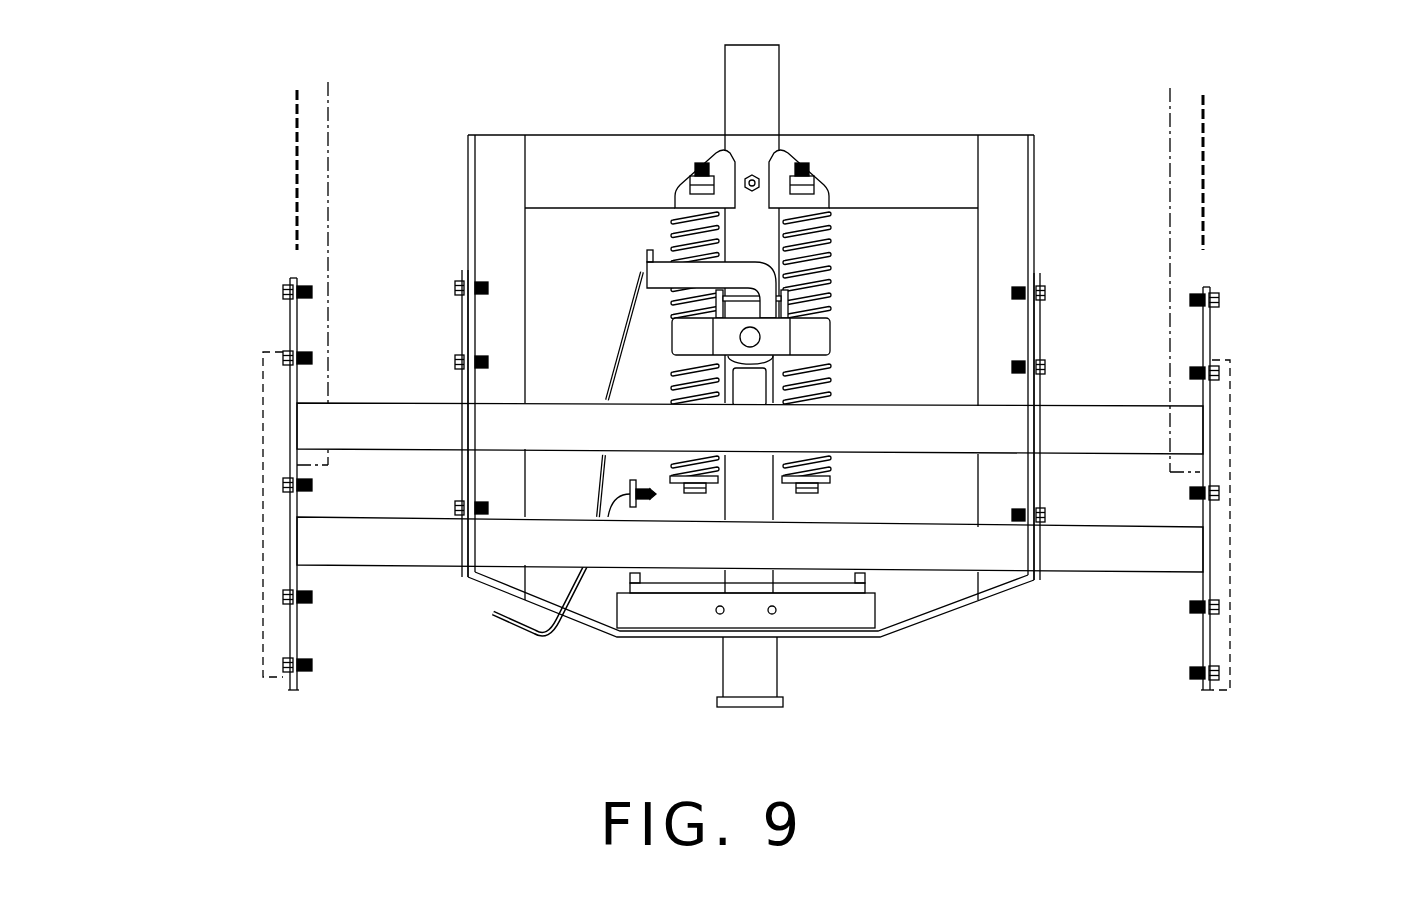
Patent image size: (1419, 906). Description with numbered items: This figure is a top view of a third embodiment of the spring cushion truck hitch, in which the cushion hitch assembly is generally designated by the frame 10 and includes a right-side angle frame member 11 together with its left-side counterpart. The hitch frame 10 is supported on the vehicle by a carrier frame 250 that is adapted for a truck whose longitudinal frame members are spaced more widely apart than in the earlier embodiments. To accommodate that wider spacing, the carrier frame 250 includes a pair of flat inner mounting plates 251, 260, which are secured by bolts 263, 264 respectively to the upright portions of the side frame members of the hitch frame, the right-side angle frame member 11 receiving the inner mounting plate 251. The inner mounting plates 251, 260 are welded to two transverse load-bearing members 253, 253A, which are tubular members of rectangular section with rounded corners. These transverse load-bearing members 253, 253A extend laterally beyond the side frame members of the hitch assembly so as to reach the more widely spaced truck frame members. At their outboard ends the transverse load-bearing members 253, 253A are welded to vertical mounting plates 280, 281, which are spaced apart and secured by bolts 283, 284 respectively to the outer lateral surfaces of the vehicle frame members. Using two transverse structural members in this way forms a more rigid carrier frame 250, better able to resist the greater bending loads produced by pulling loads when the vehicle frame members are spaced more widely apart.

The frame 10 is at (936, 131).
The right-side angle frame member 11 is at (1035, 175).
The carrier frame 250 is at (1196, 513).
The inner mounting plate 251 is at (1038, 347).
The transverse load-bearing member 253 is at (872, 540).
The transverse load-bearing member 253A is at (852, 435).
The inner mounting plate 260 is at (462, 395).
The bolts 263 is at (1043, 293).
The bolts 264 is at (455, 363).
The vertical mounting plate 280 is at (1211, 333).
The vertical mounting plate 281 is at (290, 318).
The bolts 283 is at (1218, 297).
The bolts 284 is at (283, 290).